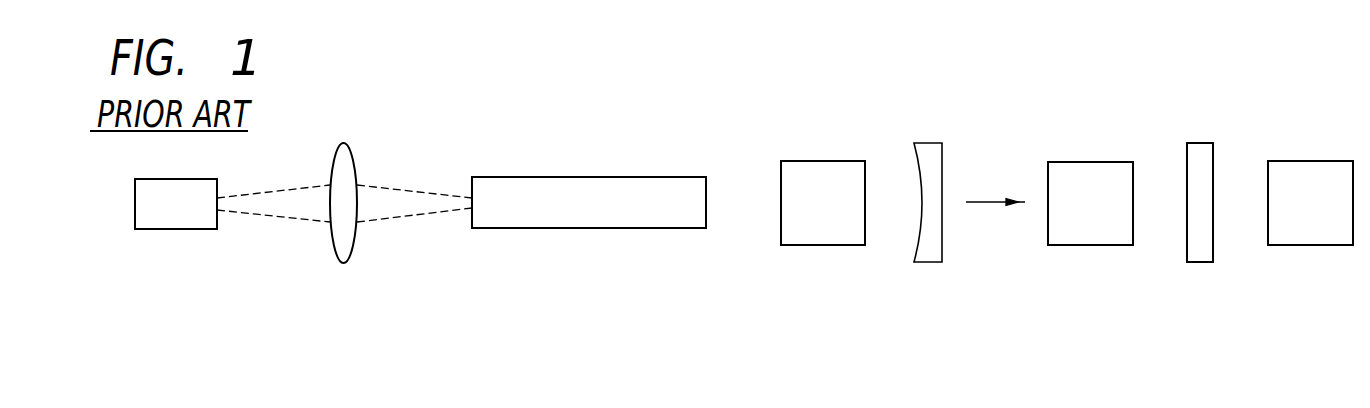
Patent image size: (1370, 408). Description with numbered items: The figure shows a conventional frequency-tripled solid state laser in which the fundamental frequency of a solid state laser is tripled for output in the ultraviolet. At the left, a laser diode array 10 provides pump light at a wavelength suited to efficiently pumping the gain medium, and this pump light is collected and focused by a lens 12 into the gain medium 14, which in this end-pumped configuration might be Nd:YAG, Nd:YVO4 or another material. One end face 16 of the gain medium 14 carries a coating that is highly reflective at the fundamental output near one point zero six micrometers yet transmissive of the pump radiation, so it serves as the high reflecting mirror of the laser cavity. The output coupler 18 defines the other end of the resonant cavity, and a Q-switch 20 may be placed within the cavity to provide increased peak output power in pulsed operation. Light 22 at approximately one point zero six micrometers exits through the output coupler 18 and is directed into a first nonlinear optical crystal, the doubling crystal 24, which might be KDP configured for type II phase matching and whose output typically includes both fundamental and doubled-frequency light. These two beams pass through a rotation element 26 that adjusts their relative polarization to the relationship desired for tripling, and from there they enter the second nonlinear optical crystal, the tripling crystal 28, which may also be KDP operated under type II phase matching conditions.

The laser diode array 10 is at (179, 216).
The lens 12 is at (344, 257).
The gain medium 14 is at (593, 215).
The end face 16 is at (470, 222).
The output coupler 18 is at (930, 252).
The Q-switch 20 is at (813, 216).
The light 22 is at (998, 202).
The doubling crystal 24 is at (1088, 229).
The rotation element 26 is at (1203, 248).
The tripling crystal 28 is at (1312, 229).